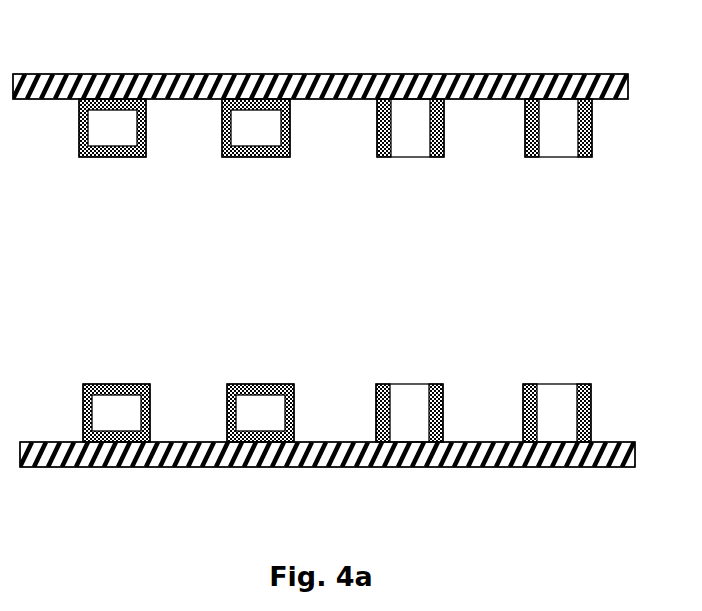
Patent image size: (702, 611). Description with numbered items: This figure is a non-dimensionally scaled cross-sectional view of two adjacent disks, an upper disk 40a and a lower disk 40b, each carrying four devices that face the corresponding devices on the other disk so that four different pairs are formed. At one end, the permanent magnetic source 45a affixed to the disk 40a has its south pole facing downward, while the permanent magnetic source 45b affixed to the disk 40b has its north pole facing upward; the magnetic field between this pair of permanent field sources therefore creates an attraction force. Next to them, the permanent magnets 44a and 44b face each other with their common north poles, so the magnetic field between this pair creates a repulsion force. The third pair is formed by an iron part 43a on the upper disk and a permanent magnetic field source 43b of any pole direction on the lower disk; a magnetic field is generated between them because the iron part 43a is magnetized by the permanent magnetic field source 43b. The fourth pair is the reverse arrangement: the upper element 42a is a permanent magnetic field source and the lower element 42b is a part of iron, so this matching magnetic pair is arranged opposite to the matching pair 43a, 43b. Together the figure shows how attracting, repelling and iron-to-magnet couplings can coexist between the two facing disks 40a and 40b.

The disk 40a is at (323, 72).
The disk 40b is at (316, 469).
The permanent magnetic field source 42a is at (110, 160).
The iron part 43a is at (254, 160).
The permanent magnet 44a is at (408, 160).
The permanent magnetic source 45a is at (555, 160).
The part of iron 42b is at (143, 408).
The permanent magnetic field source 43b is at (262, 382).
The permanent magnet 44b is at (407, 382).
The permanent magnetic source 45b is at (565, 382).